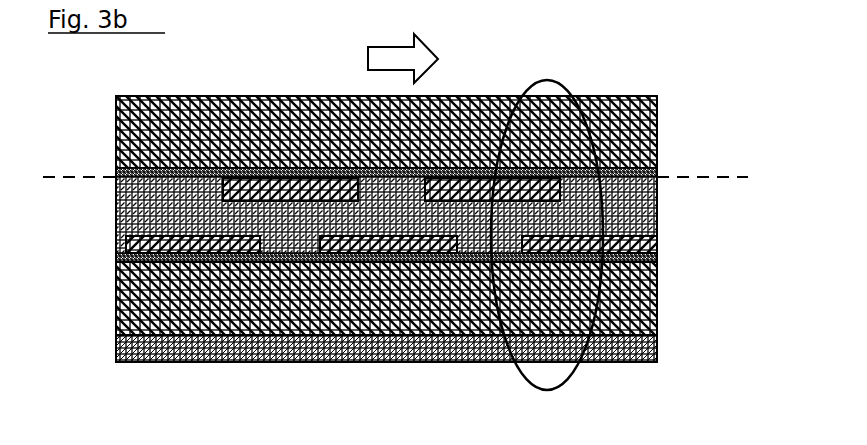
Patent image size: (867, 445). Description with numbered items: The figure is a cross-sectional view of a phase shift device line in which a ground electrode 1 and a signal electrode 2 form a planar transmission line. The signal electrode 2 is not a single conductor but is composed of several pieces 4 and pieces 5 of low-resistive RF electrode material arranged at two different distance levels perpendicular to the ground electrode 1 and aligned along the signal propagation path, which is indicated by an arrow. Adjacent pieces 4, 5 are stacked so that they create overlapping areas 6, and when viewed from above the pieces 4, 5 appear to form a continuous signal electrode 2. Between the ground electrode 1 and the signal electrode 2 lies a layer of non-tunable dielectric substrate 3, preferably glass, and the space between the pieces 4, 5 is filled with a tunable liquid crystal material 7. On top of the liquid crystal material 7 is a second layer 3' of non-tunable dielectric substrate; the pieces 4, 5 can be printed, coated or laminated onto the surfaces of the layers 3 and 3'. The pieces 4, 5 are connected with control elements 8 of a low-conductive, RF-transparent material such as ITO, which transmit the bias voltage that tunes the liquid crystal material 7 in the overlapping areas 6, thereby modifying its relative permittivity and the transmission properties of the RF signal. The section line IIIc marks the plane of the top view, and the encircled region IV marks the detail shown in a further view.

The ground electrode 1 is at (645, 345).
The signal electrode 2 is at (582, 188).
The non-tunable dielectric substrate 3 is at (429, 296).
The second layer of non-tunable dielectric substrate 3' is at (386, 107).
The pieces of the signal electrode 4 is at (213, 245).
The pieces of the signal electrode 5 is at (473, 193).
The overlapping areas 6 is at (239, 226).
The tunable liquid crystal material 7 is at (163, 215).
The control elements 8 is at (163, 176).
The detail region IV is at (547, 80).
The section line IIIc is at (70, 166).